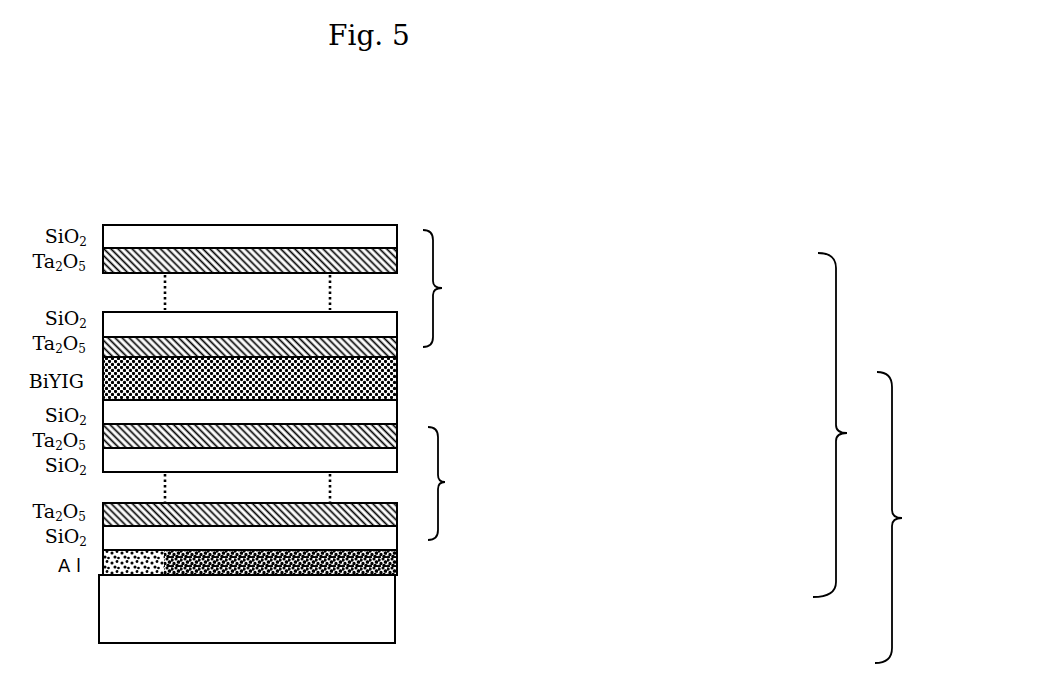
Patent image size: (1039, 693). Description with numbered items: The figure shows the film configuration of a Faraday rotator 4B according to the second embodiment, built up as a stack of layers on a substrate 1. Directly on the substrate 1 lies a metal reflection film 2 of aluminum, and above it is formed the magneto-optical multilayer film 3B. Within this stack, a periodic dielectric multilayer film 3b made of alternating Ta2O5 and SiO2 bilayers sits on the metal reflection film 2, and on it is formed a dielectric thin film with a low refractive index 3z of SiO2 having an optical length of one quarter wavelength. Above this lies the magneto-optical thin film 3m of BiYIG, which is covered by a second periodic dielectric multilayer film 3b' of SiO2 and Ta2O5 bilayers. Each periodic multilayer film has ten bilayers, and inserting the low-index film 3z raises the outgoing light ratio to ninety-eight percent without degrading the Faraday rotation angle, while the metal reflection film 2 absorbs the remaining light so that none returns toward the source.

The periodic dielectric multilayer film 3b' is at (417, 291).
The magneto-optical thin film 3m is at (396, 382).
The dielectric thin film with a low refractive index 3z is at (383, 413).
The periodic dielectric multilayer film 3b is at (414, 487).
The metal reflection film 2 is at (396, 565).
The substrate 1 is at (380, 611).
The magneto-optical multilayer film 3B is at (849, 425).
The Faraday rotator 4B is at (908, 517).